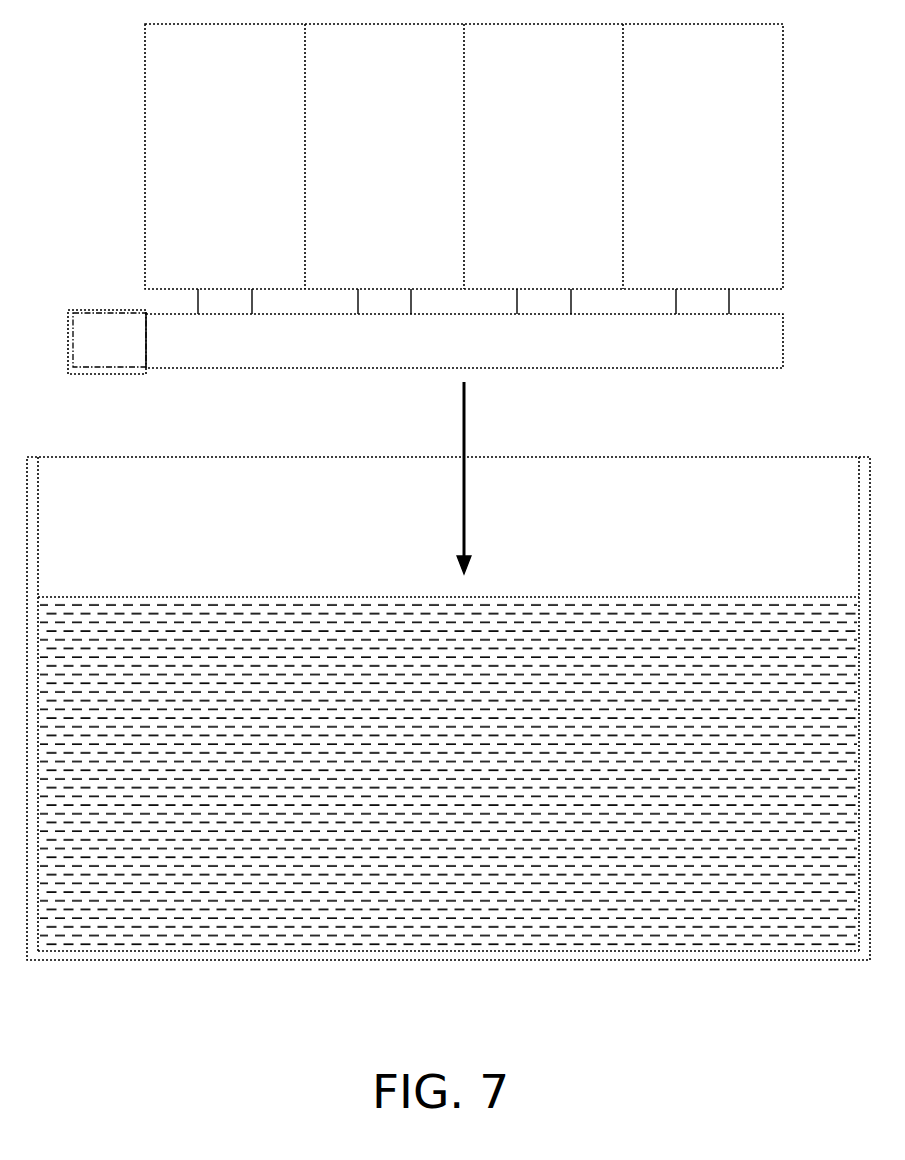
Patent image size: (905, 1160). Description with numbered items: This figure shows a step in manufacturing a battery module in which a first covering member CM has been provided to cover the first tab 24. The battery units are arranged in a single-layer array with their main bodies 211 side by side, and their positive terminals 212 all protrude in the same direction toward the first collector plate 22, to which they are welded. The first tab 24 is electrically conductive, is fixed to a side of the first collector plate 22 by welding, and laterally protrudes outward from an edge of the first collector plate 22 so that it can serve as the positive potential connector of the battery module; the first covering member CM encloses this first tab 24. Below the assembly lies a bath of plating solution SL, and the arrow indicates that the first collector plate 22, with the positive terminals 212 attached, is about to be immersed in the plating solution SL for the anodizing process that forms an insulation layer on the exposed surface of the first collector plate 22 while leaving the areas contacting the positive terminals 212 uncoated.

The main body 211 is at (188, 170).
The positive terminal 212 is at (208, 301).
The first collector plate 22 is at (773, 358).
The first tab 24 is at (82, 338).
The first covering member CM is at (108, 374).
The plating solution SL is at (790, 620).